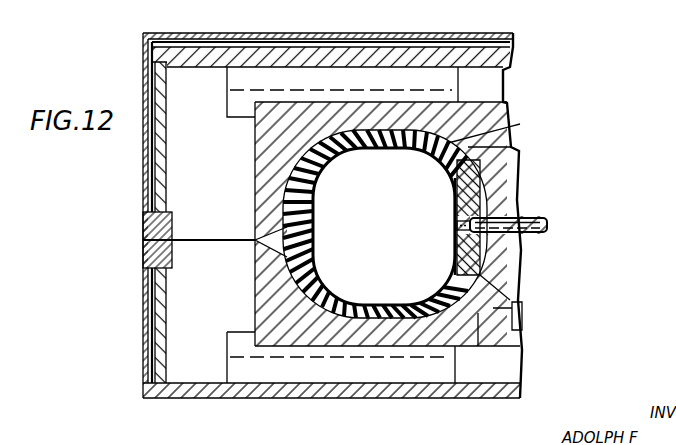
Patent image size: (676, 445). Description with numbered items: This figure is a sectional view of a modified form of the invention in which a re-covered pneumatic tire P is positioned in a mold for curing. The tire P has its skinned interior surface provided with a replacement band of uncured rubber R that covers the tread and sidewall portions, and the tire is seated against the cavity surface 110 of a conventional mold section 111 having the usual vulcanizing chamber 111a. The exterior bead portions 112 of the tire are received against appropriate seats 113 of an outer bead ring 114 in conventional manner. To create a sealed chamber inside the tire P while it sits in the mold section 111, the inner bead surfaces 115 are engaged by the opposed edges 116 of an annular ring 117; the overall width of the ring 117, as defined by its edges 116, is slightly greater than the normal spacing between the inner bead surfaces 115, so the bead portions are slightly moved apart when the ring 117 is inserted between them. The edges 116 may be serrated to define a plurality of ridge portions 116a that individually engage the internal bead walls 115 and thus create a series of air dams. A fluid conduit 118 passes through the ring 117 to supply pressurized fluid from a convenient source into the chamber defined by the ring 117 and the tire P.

The cavity surface 110 is at (450, 142).
The mold section 111 is at (265, 145).
The vulcanizing chamber 111a is at (199, 222).
The exterior bead portion 112 is at (483, 142).
The seat 113 is at (486, 288).
The outer bead ring 114 is at (521, 278).
The inner bead surface 115 is at (455, 197).
The edge 116 is at (458, 175).
The ridge portion 116a is at (483, 178).
The annular ring 117 is at (457, 238).
The fluid conduit 118 is at (540, 217).
The pneumatic tire P is at (358, 147).
The replacement band of uncured rubber R is at (296, 255).